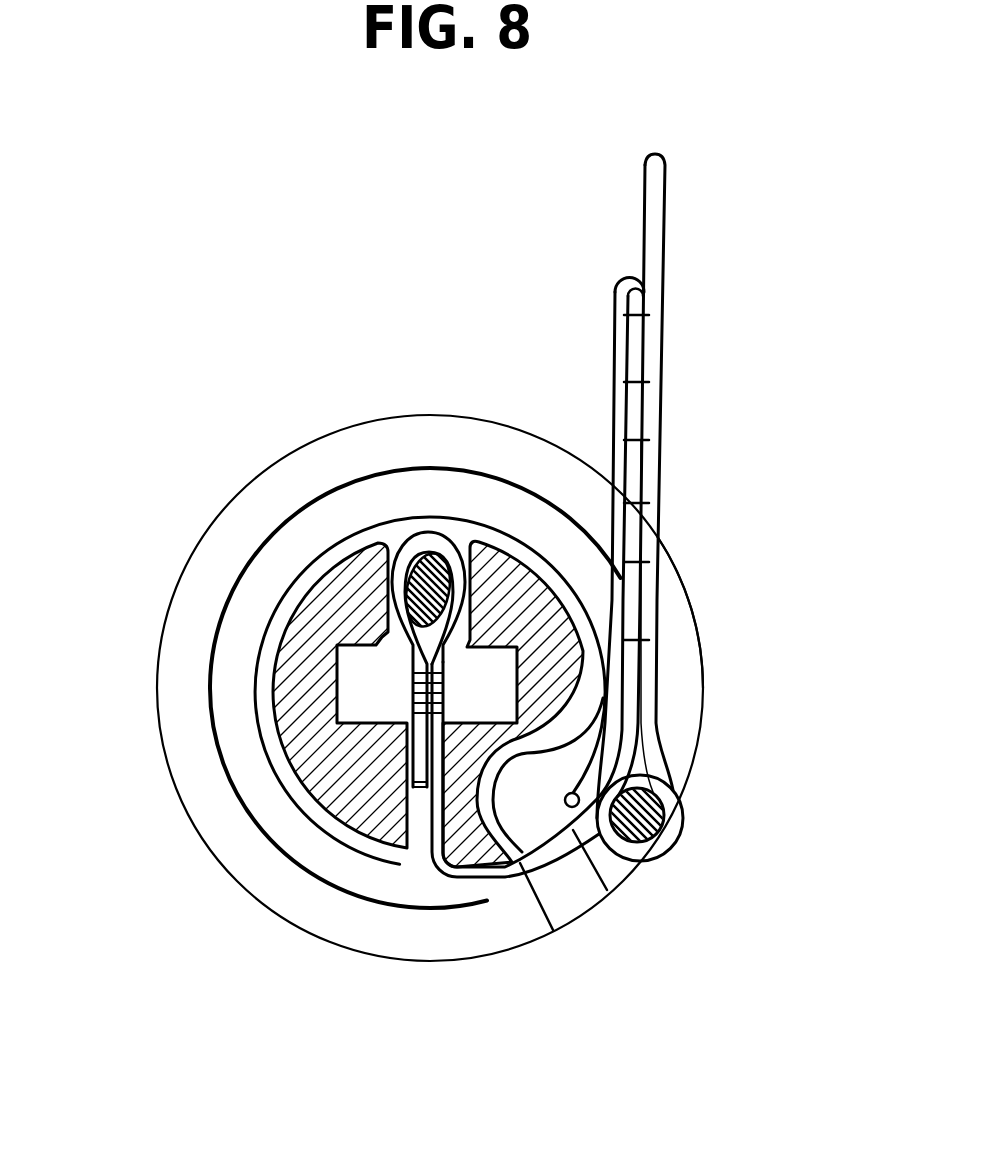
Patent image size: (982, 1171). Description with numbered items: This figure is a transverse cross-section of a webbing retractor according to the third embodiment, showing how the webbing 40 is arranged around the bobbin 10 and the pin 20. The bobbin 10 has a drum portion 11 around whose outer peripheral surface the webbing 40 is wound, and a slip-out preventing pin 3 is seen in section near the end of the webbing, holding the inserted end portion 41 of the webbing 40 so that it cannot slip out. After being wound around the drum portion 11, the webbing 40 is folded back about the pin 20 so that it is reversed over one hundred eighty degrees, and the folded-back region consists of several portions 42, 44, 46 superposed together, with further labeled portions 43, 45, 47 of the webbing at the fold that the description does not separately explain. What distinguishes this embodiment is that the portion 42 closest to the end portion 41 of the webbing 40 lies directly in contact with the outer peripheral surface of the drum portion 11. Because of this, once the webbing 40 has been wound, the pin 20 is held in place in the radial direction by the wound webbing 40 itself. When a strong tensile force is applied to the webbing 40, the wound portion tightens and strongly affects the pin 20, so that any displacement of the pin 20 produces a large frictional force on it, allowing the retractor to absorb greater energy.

The slip-out preventing pin 3 is at (413, 570).
The bobbin 10 is at (187, 555).
The drum portion 11 is at (292, 710).
The pin 20 is at (660, 813).
The webbing 40 is at (642, 220).
The end portion 41 is at (421, 558).
The portion 42 is at (612, 425).
The bent end portion 43 is at (632, 283).
The portion 44 is at (635, 480).
The ring portion 45 is at (663, 858).
The portion 46 is at (657, 620).
The stop portion 47 is at (637, 380).